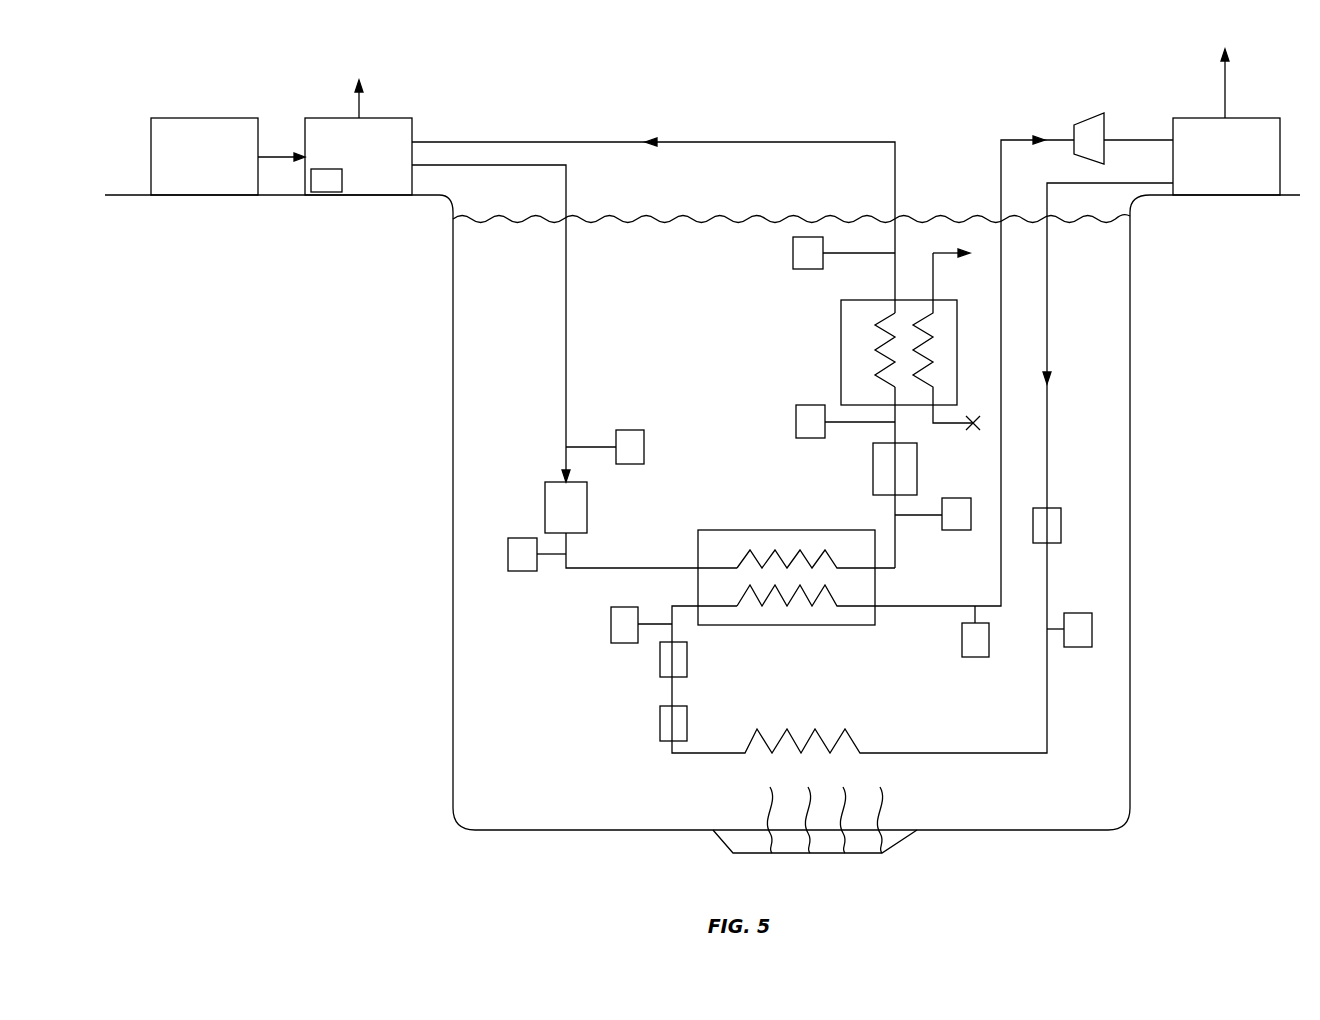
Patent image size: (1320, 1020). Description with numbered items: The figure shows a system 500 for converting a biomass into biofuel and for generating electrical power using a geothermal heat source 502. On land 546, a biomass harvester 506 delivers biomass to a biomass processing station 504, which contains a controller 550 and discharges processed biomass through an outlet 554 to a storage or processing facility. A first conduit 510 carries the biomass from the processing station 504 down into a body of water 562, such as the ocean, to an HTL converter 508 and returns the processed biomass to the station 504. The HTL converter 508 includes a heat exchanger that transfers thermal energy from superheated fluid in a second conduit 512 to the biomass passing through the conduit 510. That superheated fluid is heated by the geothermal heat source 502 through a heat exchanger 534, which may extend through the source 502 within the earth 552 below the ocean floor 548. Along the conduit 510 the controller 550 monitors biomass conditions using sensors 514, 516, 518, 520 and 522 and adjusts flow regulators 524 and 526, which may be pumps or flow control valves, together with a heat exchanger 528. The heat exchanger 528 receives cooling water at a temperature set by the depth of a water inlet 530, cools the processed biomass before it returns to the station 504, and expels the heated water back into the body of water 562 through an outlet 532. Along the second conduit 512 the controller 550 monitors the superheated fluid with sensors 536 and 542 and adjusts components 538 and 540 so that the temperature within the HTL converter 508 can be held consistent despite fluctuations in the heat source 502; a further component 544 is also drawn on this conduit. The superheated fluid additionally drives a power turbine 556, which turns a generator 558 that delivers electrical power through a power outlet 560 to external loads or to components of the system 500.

The system 500 is at (170, 47).
The geothermal heat source 502 is at (880, 866).
The biomass processing station 504 is at (392, 118).
The biomass harvester 506 is at (207, 118).
The HTL converter 508 is at (783, 530).
The first conduit 510 is at (794, 142).
The second conduit 512 is at (672, 690).
The sensor 514 is at (644, 447).
The sensor 516 is at (522, 571).
The sensor 518 is at (957, 530).
The sensor 520 is at (796, 421).
The sensor 522 is at (793, 253).
The flow regulator 524 is at (587, 505).
The flow regulator 526 is at (917, 478).
The heat exchanger 528 is at (841, 333).
The water inlet 530 is at (956, 433).
The outlet 532 is at (969, 253).
The heat exchanger 534 is at (722, 788).
The sensor 536 is at (611, 628).
The component 538 is at (687, 655).
The component 540 is at (687, 720).
The sensor 542 is at (975, 657).
The valve 544 is at (1061, 525).
The land 546 is at (702, 512).
The ocean floor 548 is at (1067, 826).
The controller 550 is at (335, 169).
The earth 552 is at (615, 863).
The outlet 554 is at (359, 87).
The power turbine 556 is at (1083, 125).
The generator 558 is at (1226, 156).
The power outlet 560 is at (1225, 72).
The body of water 562 is at (791, 265).